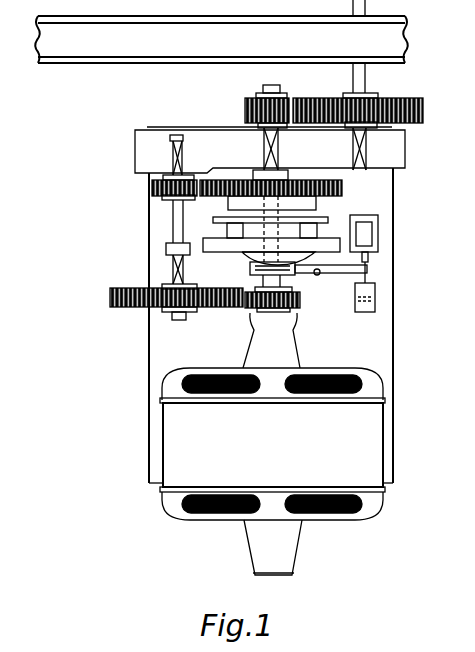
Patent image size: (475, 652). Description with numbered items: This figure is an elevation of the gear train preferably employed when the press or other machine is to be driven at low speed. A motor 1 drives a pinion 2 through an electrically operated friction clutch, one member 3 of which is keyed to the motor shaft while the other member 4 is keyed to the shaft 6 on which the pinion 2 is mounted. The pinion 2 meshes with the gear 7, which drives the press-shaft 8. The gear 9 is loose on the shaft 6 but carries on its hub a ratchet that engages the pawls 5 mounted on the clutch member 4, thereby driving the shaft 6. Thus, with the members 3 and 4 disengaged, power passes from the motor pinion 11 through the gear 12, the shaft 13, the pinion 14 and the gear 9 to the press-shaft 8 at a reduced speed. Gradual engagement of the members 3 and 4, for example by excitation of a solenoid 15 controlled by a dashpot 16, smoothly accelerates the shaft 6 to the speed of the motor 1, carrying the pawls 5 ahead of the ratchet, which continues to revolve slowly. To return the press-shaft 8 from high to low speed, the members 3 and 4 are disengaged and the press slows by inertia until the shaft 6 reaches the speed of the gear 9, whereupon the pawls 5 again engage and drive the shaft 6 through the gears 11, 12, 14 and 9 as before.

The motor 1 is at (177, 425).
The pinion 2 is at (245, 101).
The clutch member 3 is at (238, 243).
The clutch member 4 is at (228, 223).
The pawls 5 is at (311, 325).
The shaft 6 is at (262, 140).
The gear 7 is at (424, 105).
The press-shaft 8 is at (366, 79).
The gear 9 is at (236, 180).
The motor pinion 11 is at (300, 303).
The gear 12 is at (110, 295).
The shaft 13 is at (170, 239).
The pinion 14 is at (152, 188).
The solenoid 15 is at (378, 229).
The dashpot 16 is at (375, 296).